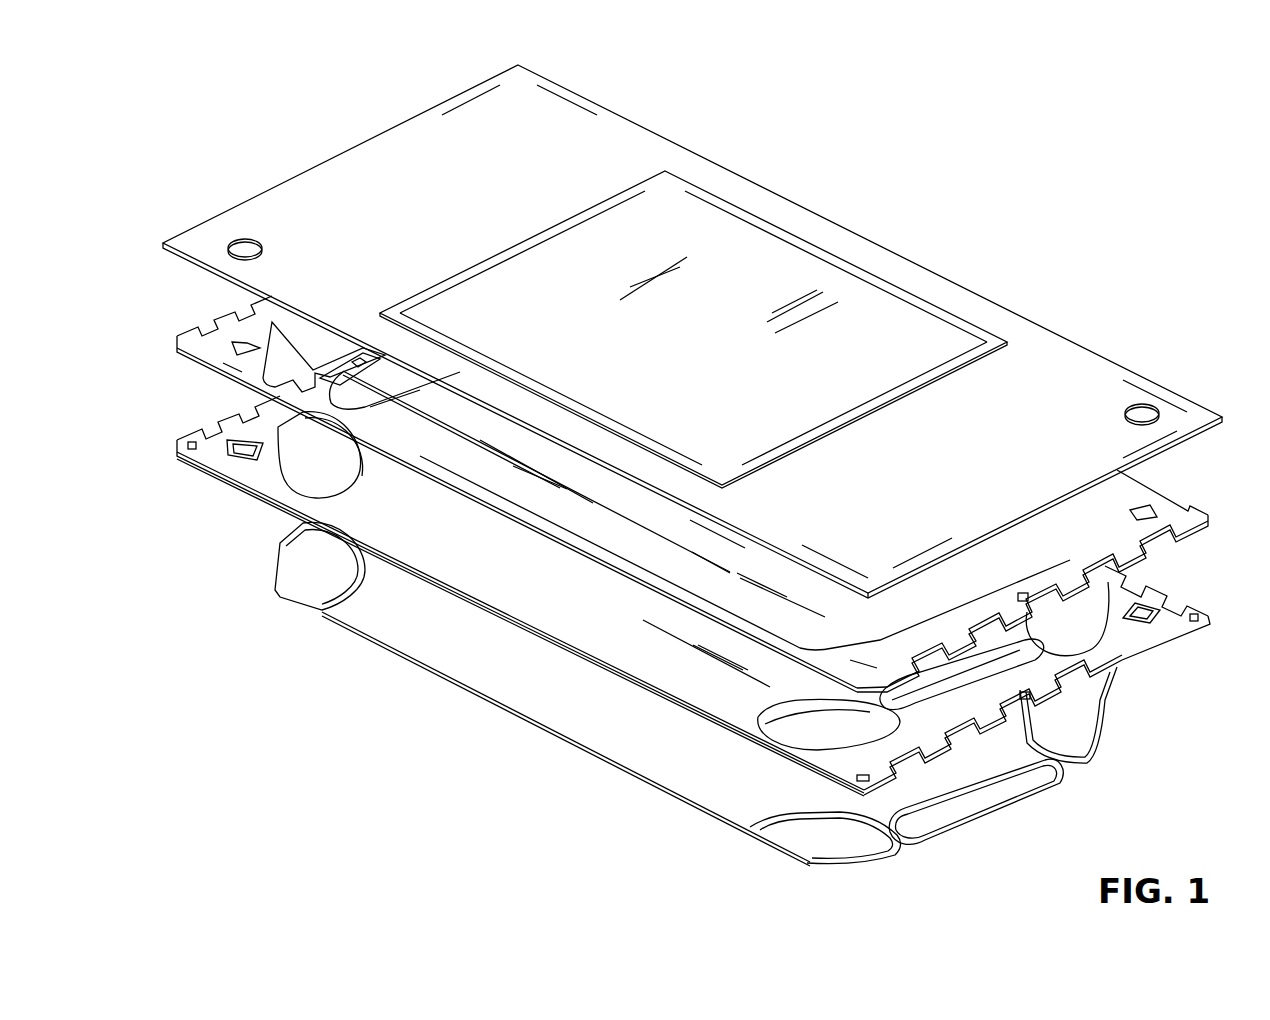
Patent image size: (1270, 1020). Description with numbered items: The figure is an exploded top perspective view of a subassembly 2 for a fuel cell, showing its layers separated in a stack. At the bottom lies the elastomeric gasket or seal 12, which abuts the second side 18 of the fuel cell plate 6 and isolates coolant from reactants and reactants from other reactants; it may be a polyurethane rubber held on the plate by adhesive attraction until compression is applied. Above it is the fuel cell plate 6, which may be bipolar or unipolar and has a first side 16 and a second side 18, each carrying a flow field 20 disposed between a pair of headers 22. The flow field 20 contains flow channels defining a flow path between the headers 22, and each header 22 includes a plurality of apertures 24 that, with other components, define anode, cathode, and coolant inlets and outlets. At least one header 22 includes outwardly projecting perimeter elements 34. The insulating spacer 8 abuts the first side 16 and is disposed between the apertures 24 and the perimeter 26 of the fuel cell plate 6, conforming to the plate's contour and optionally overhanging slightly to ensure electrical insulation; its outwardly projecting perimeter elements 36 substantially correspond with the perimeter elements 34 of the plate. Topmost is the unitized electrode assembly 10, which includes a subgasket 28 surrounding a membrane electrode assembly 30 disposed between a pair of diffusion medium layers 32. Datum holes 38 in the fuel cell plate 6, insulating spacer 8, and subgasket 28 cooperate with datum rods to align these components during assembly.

The subassembly 2 is at (978, 210).
The fuel cell plate 6 is at (1195, 603).
The insulating spacer 8 is at (1195, 500).
The unitized electrode assembly 10 is at (1100, 347).
The elastomeric seal 12 is at (1107, 726).
The first side 16 is at (518, 574).
The second side 18 is at (650, 686).
The flow field 20 is at (592, 612).
The header 22 is at (843, 705).
The aperture 24 is at (900, 720).
The perimeter 26 is at (430, 580).
The subgasket 28 is at (892, 503).
The membrane electrode assembly 30 is at (720, 295).
The diffusion medium layer 32 is at (729, 403).
The outwardly projecting perimeter element 34 is at (975, 728).
The outwardly projecting perimeter element 36 is at (993, 640).
The datum hole 38 is at (1135, 608).